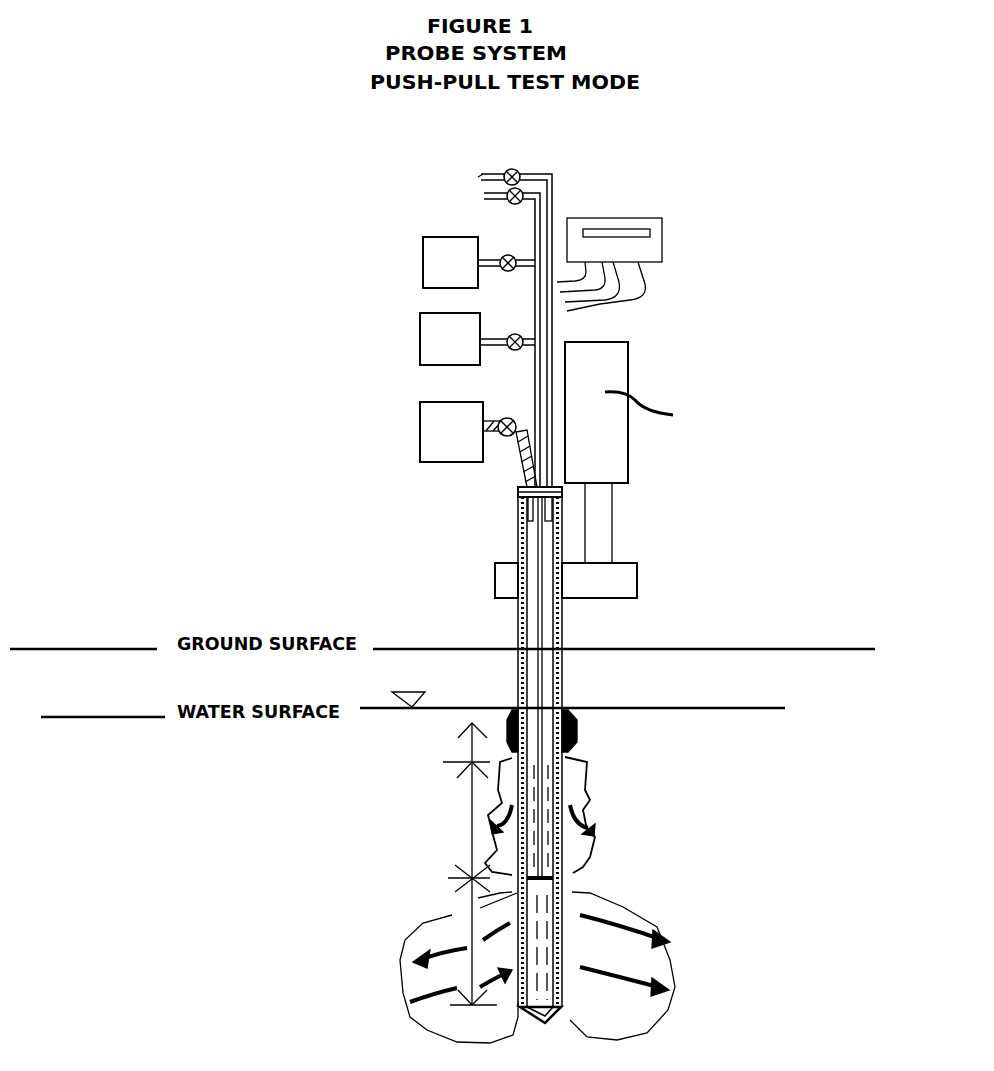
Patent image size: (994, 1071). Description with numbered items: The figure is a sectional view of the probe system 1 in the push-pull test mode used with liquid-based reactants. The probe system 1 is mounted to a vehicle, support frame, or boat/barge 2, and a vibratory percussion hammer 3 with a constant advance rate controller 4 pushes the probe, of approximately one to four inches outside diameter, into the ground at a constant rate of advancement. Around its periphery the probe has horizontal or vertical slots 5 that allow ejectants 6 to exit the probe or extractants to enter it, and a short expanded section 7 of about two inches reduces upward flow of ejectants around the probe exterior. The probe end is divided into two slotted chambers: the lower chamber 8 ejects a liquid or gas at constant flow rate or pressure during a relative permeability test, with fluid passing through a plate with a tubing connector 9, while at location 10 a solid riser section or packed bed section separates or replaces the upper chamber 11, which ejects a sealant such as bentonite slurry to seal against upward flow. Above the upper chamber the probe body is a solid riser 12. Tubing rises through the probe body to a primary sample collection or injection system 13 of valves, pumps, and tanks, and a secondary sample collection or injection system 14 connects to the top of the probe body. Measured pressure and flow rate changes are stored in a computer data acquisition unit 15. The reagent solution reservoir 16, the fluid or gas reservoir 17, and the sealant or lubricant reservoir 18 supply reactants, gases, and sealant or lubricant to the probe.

The probe system 1 is at (500, 545).
The vehicle, support frame, or boat/barge 2 is at (580, 571).
The vibratory percussion hammer 3 is at (611, 452).
The constant advance rate controller 4 is at (651, 413).
The slots 5 is at (565, 768).
The ejectants 6 is at (582, 807).
The expanded section 7 is at (580, 723).
The lower chamber 8 is at (517, 910).
The plate with a tubing connector 9 is at (535, 878).
The solid riser section or packed bed section location 10 is at (562, 857).
The upper chamber 11 is at (520, 790).
The solid riser 12 is at (517, 708).
The primary sample collection or injection system 13 is at (468, 192).
The secondary sample collection or injection system 14 is at (487, 165).
The computer data acquisition unit 15 is at (629, 264).
The reagent solution reservoir 16 is at (405, 272).
The fluid or gas reservoir 17 is at (400, 342).
The sealant or lubricant reservoir 18 is at (405, 442).